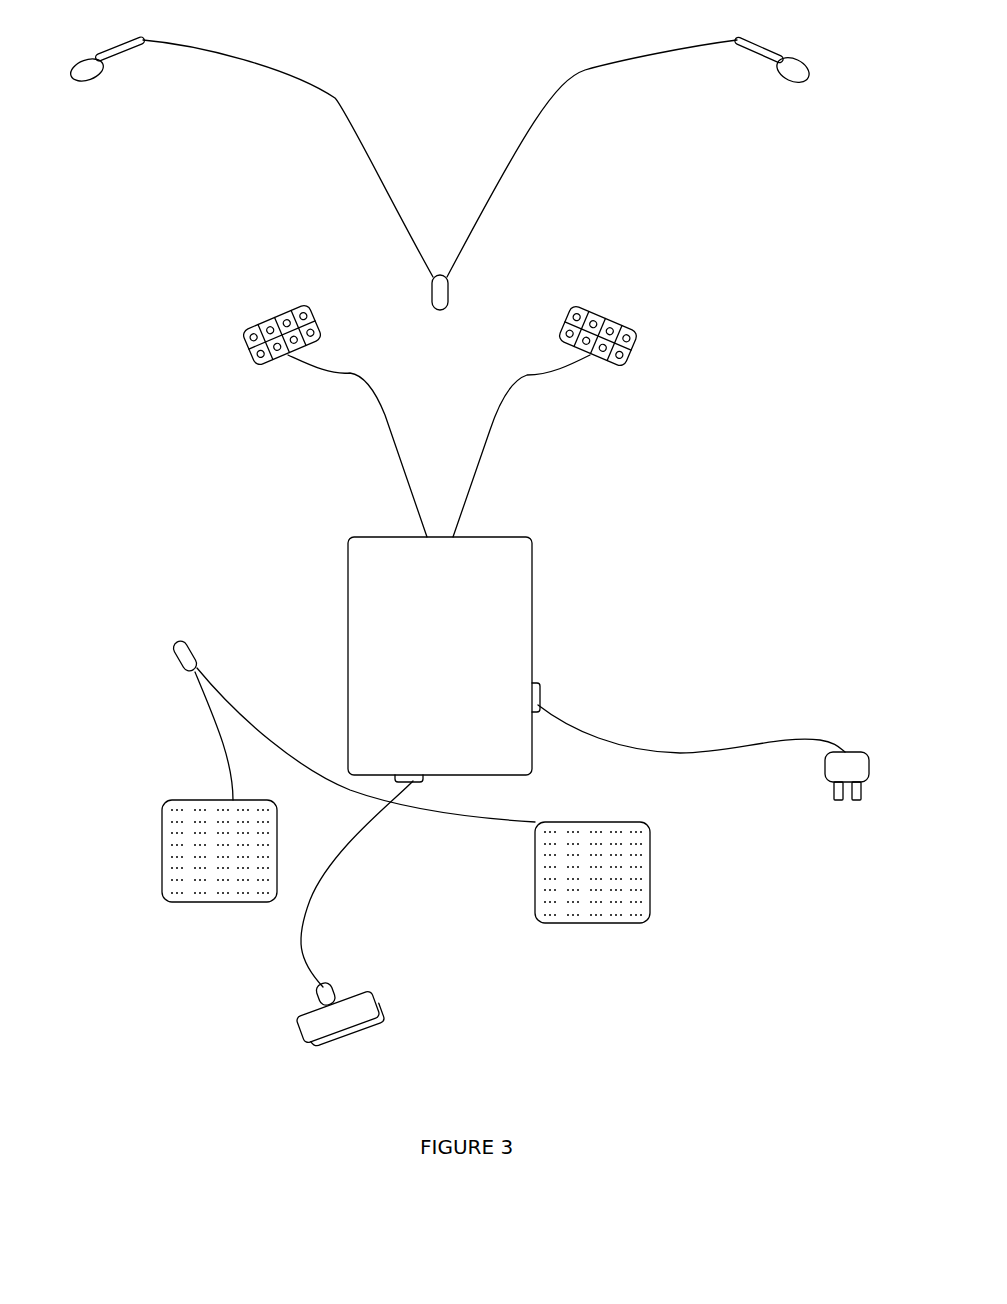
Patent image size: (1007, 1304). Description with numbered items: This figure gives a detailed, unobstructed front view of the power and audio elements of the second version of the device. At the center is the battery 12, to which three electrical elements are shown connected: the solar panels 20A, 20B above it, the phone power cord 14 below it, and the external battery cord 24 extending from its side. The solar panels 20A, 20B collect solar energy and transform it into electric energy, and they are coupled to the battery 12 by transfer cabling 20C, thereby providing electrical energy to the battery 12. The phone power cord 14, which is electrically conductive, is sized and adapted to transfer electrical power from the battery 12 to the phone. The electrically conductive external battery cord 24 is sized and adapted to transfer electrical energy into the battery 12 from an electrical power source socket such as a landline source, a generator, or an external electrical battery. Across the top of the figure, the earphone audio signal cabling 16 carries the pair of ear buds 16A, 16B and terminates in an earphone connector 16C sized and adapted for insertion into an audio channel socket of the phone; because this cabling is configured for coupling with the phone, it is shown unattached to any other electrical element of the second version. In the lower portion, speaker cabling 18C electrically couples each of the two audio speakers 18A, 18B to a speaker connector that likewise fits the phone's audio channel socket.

The battery 12 is at (533, 617).
The phone power cord 14 is at (300, 962).
The audio signal cabling 16 is at (344, 108).
The ear bud 16A is at (95, 80).
The ear bud 16B is at (790, 83).
The earphone connector 16C is at (450, 292).
The audio speaker 18A is at (162, 842).
The audio speaker 18B is at (650, 885).
The speaker cabling 18C is at (178, 658).
The solar panel 20A is at (245, 355).
The solar panel 20B is at (635, 357).
The transfer cabling 20C is at (388, 435).
The external battery cord 24 is at (683, 752).